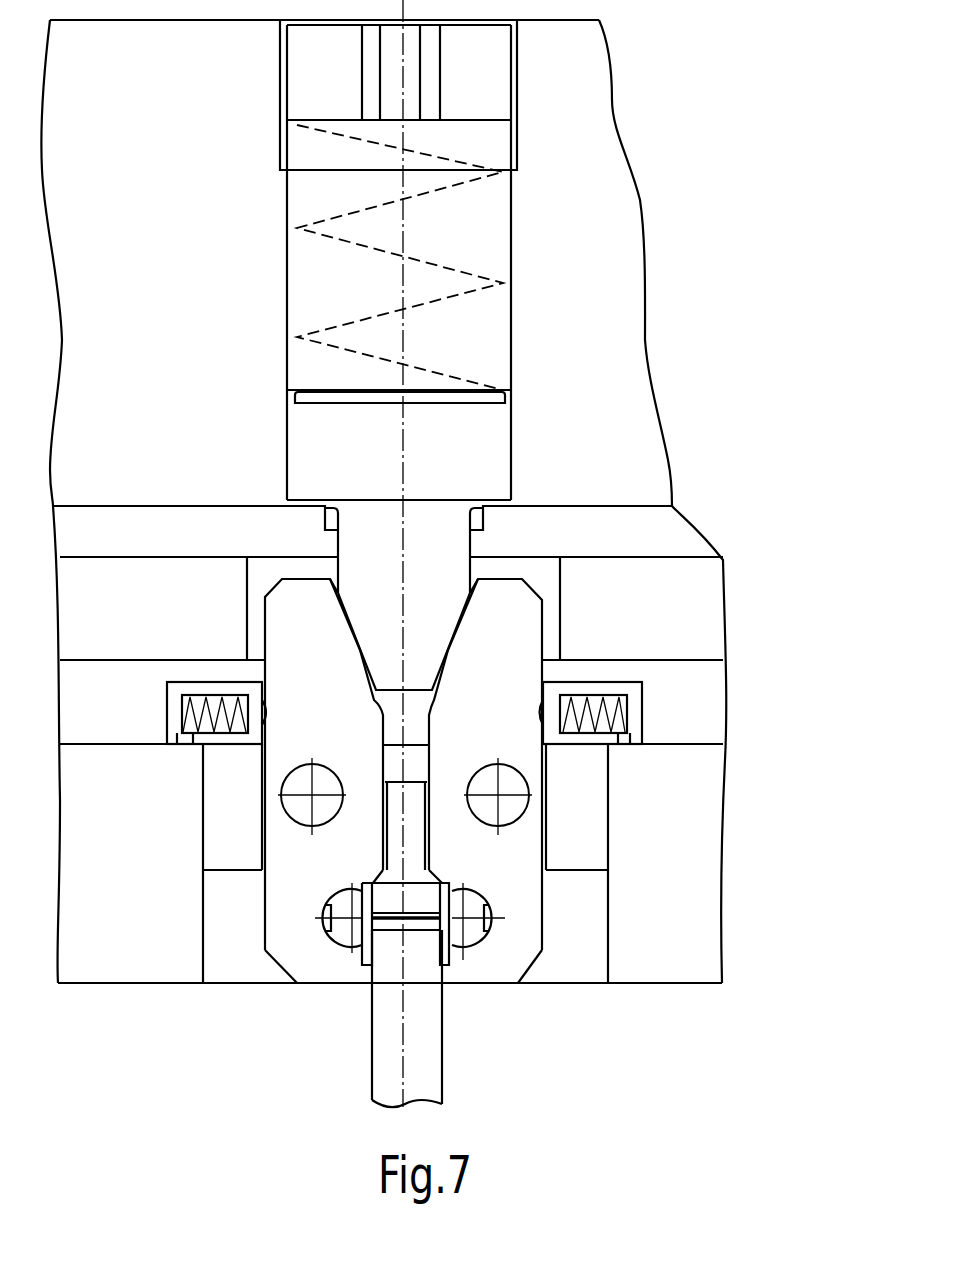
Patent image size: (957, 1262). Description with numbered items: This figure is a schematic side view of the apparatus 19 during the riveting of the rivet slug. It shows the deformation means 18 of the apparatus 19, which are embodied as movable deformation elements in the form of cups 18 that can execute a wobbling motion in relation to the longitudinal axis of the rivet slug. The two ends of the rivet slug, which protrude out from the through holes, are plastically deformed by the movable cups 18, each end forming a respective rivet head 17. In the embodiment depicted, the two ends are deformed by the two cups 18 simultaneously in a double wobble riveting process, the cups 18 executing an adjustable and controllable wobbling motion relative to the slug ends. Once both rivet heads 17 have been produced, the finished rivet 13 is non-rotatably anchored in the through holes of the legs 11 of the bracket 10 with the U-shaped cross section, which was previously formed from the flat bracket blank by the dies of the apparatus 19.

The bracket 10 is at (438, 945).
The legs 11 is at (365, 955).
The rivet 13 is at (456, 908).
The rivet heads 17 is at (357, 886).
The deformation means (movable cups) 18 is at (327, 903).
The apparatus 19 is at (705, 482).